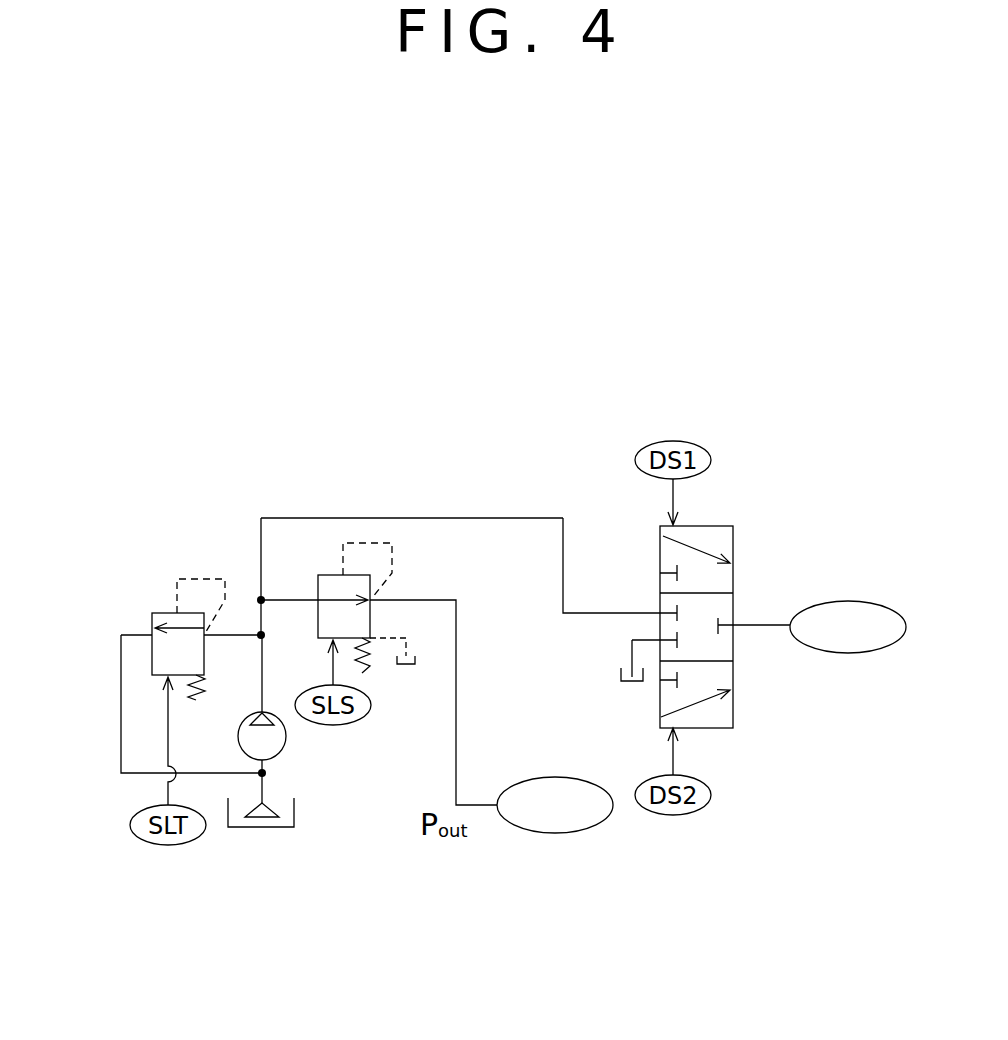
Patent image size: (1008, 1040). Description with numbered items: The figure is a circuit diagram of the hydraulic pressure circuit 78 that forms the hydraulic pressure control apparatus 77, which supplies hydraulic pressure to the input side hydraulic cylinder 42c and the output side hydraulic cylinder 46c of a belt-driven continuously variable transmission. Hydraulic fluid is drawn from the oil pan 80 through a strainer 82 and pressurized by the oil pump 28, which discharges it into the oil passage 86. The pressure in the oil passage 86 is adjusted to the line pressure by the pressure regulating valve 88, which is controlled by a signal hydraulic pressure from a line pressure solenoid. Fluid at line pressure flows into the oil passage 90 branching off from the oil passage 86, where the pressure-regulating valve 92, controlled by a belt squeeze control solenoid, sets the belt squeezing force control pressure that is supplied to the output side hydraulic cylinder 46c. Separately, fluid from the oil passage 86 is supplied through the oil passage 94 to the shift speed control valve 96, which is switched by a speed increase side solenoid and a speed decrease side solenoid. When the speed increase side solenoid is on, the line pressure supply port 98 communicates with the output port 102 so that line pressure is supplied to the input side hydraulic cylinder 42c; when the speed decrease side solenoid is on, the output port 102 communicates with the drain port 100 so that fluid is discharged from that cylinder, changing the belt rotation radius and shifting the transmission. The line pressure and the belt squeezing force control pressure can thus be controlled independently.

The oil pump 28 is at (238, 737).
The hydraulic pressure control apparatus 77 is at (654, 384).
The hydraulic pressure circuit 78 is at (510, 474).
The oil pan 80 is at (294, 815).
The strainer 82 is at (266, 830).
The oil passage 86 is at (262, 693).
The pressure regulating valve 88 is at (157, 587).
The oil passage 90 is at (290, 600).
The pressure-regulating valve 92 is at (410, 574).
The oil passage 94 is at (295, 515).
The shift speed control valve 96 is at (770, 522).
The line pressure supply port 98 is at (660, 613).
The drain port 100 is at (660, 640).
The output port 102 is at (733, 625).
The input side hydraulic cylinder 42c is at (858, 605).
The output side hydraulic cylinder 46c is at (557, 835).